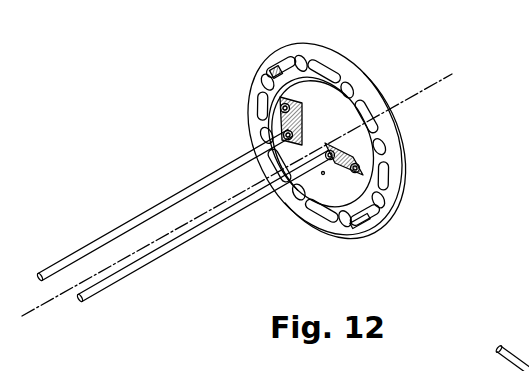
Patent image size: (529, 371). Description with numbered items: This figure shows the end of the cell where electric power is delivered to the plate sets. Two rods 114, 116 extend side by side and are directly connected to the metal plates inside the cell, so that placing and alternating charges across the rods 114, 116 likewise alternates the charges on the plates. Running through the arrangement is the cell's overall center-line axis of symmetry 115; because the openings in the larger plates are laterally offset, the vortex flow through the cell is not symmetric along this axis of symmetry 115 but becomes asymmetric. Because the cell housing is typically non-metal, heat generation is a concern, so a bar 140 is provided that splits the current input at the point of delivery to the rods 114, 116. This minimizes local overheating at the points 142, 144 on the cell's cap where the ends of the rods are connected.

The rod 114 is at (117, 234).
The center-line axis of symmetry 115 is at (412, 98).
The rod 116 is at (175, 248).
The bar 140 is at (262, 108).
The rod end connection point 142 is at (283, 124).
The rod end connection point 144 is at (341, 135).